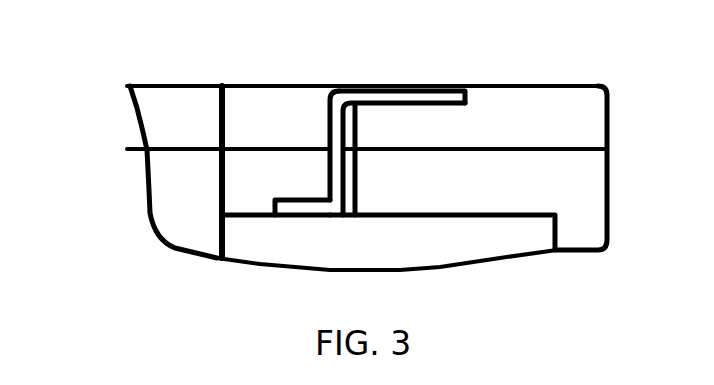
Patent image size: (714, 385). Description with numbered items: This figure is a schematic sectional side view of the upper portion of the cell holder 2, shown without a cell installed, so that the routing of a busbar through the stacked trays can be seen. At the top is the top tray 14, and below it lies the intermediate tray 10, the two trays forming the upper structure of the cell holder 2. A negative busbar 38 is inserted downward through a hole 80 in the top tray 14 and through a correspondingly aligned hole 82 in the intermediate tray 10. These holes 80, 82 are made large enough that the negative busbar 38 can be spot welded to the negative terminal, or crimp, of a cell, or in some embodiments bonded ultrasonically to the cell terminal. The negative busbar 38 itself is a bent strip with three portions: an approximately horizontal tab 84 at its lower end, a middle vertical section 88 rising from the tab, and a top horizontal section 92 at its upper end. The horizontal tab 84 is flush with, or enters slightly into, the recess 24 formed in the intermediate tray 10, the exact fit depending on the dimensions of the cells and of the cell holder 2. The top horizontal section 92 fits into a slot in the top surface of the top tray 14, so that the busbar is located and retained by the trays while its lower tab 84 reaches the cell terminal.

The cell holder 2 is at (86, 47).
The intermediate tray 10 is at (612, 183).
The top tray 14 is at (537, 86).
The recess 24 is at (550, 228).
The negative busbar 38 is at (412, 86).
The hole in the top tray 80 is at (228, 137).
The hole in the intermediate tray 82 is at (225, 198).
The horizontal tab 84 is at (307, 218).
The middle vertical section 88 is at (328, 126).
The top horizontal section 92 is at (407, 105).